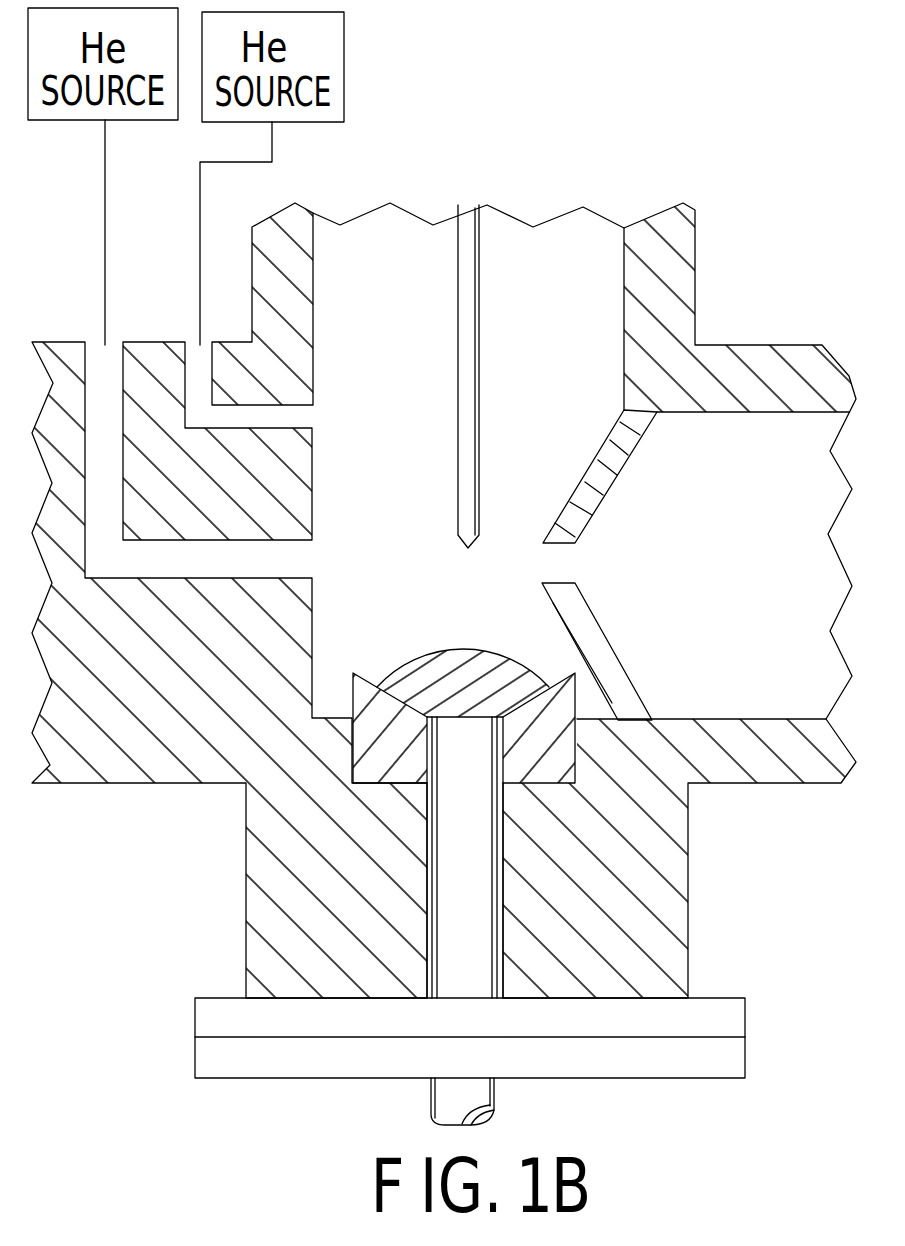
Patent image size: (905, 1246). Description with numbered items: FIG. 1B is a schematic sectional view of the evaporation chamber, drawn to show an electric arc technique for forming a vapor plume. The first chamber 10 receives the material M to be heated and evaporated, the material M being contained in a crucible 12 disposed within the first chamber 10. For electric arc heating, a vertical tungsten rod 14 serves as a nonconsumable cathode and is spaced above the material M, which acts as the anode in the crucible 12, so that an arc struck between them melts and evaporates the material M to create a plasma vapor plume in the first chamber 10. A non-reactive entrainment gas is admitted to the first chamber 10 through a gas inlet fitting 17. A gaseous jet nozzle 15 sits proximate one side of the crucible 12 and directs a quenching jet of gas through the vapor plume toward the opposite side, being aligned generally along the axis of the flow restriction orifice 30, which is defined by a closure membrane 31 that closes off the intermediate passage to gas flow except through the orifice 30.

The first chamber 10 is at (555, 431).
The crucible 12 is at (355, 703).
The vertical tungsten rod 14 is at (467, 278).
The gaseous jet nozzle 15 is at (288, 560).
The gas inlet fitting 17 is at (307, 417).
The flow restriction orifice 30 is at (562, 563).
The closure membrane 31 is at (602, 628).
The material M is at (453, 650).